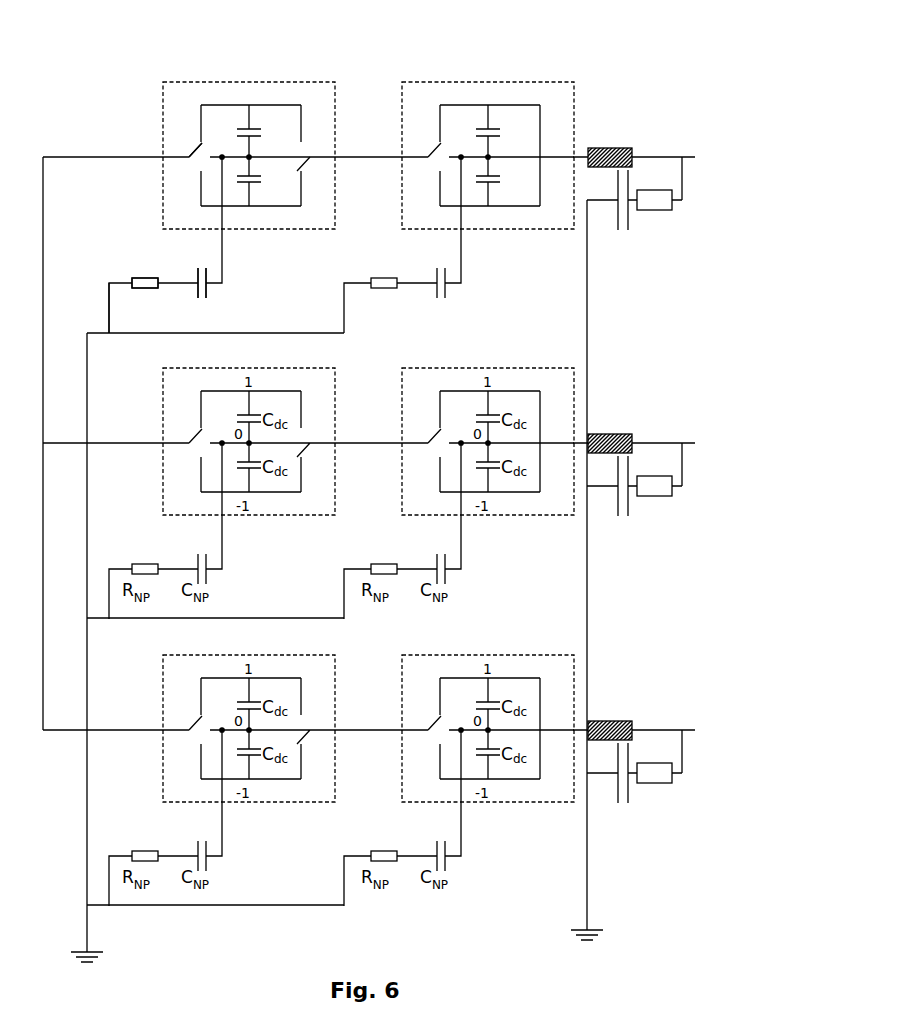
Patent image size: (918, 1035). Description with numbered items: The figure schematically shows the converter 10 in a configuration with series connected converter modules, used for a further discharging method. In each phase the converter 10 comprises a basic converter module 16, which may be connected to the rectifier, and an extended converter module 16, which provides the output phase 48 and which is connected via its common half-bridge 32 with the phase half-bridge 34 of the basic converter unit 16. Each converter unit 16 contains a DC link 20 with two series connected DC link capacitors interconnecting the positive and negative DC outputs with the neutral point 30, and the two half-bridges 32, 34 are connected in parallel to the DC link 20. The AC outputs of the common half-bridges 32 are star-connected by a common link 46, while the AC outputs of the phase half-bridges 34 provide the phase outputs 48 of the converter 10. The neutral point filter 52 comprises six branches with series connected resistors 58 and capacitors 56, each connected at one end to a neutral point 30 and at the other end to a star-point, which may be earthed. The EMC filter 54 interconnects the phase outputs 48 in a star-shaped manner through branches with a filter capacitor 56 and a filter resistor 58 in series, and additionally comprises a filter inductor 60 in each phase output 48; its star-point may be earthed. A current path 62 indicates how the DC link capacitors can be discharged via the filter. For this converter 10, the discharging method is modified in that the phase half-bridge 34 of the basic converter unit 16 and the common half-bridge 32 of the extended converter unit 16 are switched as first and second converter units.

The AC-AC converter 10 is at (678, 64).
The converter unit 16 is at (364, 467).
The DC link 20 is at (255, 128).
The neutral point 30 is at (210, 135).
The common half-bridge 32 is at (194, 117).
The phase half-bridge 34 is at (316, 117).
The common link 46 is at (47, 203).
The phase output 48 is at (690, 155).
The neutral point filter 52 is at (128, 136).
The EMC filter 54 is at (657, 136).
The filter capacitor 56 is at (195, 278).
The filter resistor 58 is at (137, 278).
The filter inductor 60 is at (620, 146).
The current path 62 is at (110, 310).